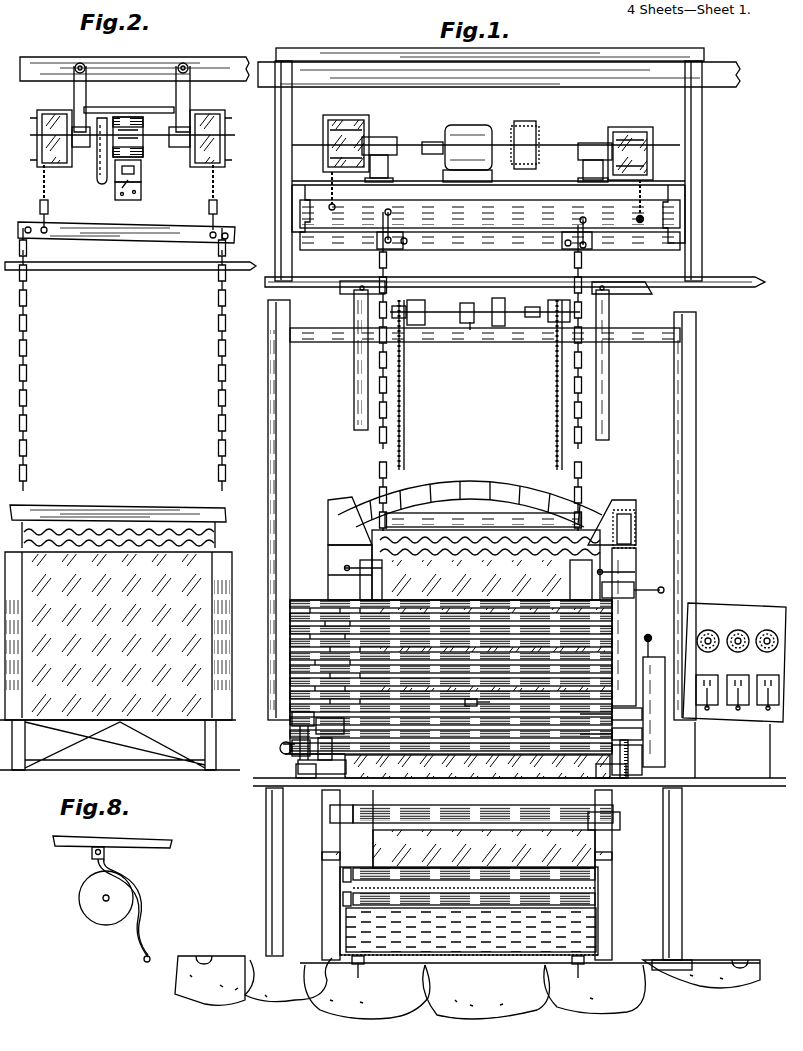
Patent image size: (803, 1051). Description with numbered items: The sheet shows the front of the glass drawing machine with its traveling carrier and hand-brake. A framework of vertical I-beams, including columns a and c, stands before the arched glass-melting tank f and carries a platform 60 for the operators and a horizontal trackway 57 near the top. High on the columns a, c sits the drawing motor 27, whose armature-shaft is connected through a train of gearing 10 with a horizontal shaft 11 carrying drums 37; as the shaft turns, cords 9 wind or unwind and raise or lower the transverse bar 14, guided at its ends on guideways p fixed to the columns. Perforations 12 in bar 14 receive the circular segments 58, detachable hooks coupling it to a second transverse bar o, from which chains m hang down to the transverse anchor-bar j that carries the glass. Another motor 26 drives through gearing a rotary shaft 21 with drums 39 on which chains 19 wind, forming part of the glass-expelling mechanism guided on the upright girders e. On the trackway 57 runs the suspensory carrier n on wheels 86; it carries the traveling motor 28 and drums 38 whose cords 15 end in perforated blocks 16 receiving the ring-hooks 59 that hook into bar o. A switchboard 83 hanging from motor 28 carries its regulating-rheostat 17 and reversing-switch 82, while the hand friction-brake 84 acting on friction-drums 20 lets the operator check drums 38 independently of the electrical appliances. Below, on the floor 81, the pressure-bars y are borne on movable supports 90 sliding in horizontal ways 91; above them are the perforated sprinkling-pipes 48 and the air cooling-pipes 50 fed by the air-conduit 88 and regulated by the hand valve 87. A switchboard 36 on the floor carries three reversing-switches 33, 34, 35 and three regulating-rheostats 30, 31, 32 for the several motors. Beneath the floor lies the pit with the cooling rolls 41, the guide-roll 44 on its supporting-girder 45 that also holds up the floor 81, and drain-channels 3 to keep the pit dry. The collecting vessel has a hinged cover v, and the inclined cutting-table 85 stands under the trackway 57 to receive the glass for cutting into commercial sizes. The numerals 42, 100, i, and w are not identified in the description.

In FIG. 1, the drain-channels 3 is at (740, 968).
In FIG. 1, the flexible bands or wire cords 9 is at (638, 203).
In FIG. 1, the train of gearing 10 is at (532, 136).
In FIG. 1, the horizontal rotary shaft 11 is at (565, 148).
In FIG. 1, the perforations 12 is at (586, 220).
In FIG. 1, the transverse bar 14 is at (616, 236).
In FIG. 2, the suspensory bands or wire cords 15 is at (218, 195).
In FIG. 2, the blocks 16 is at (117, 214).
In FIG. 2, the regulating-rheostat 17 is at (120, 196).
In FIG. 1, the winding ropes or chains 19 is at (480, 385).
In FIG. 8, the friction-drums 20 is at (111, 880).
In FIG. 1, the rotary shaft 21 is at (485, 315).
In FIG. 1, the electric motor 26 is at (472, 330).
In FIG. 1, the motor 27 is at (459, 142).
In FIG. 2, the traveling motor 28 is at (143, 150).
In FIG. 1, the regulating-rheostat 30 is at (706, 631).
In FIG. 1, the regulating-rheostat 31 is at (737, 631).
In FIG. 1, the regulating-rheostat 32 is at (767, 631).
In FIG. 1, the reversing-switch 33 is at (705, 683).
In FIG. 1, the reversing-switch 34 is at (738, 683).
In FIG. 1, the reversing-switch 35 is at (768, 683).
In FIG. 1, the switchboard 36 is at (734, 690).
In FIG. 1, the drums 37 is at (489, 140).
In FIG. 2, the drums 38 is at (212, 116).
In FIG. 1, the drums 39 is at (598, 318).
In FIG. 1, the rolls 41 is at (469, 892).
In FIG. 1, the tank bottom 42 is at (600, 916).
In FIG. 1, the guide-roll 44 is at (475, 826).
In FIG. 1, the supporting-girder 45 is at (610, 888).
In FIG. 1, the sprinkling-pipes 48 is at (645, 726).
In FIG. 1, the air cooling-pipes 50 is at (309, 593).
In FIG. 2, the trackway 57 is at (134, 60).
In FIG. 1, the trackway 57 is at (710, 56).
In FIG. 1, the circular segments 58 is at (376, 236).
In FIG. 2, the segmental ring-hooks 59 is at (226, 226).
In FIG. 2, the platform 60 is at (130, 257).
In FIG. 1, the platform 60 is at (515, 272).
In FIG. 1, the floor 81 is at (519, 777).
In FIG. 2, the reversing-switch 82 is at (135, 172).
In FIG. 2, the switchboard 83 is at (141, 195).
In FIG. 2, the hand friction-brake 84 is at (89, 151).
In FIG. 8, the hand friction-brake 84 is at (129, 904).
In FIG. 2, the inclined cutting-table 85 is at (120, 745).
In FIG. 2, the wheels 86 is at (186, 60).
In FIG. 1, the hand gate or valve 87 is at (664, 590).
In FIG. 1, the air-conduit 88 is at (636, 526).
In FIG. 1, the movable supports 90 is at (461, 745).
In FIG. 1, the horizontal ways 91 is at (624, 788).
In FIG. 2, the shaft 100 is at (160, 132).
In FIG. 1, the vertical I-beam a is at (696, 398).
In FIG. 1, the vertical I-beam c is at (290, 370).
In FIG. 1, the upright girders e is at (478, 365).
In FIG. 1, the glass-melting tank f is at (473, 503).
In FIG. 2, the glass plate i is at (118, 621).
In FIG. 1, the glass plate i is at (486, 565).
In FIG. 2, the transverse anchor-bar j is at (125, 517).
In FIG. 1, the transverse anchor-bar j is at (482, 525).
In FIG. 2, the chains m is at (219, 340).
In FIG. 1, the chains m is at (586, 450).
In FIG. 2, the suspensory carrier n is at (129, 101).
In FIG. 2, the transverse bar o is at (154, 248).
In FIG. 1, the transverse bar o is at (490, 247).
In FIG. 1, the guideways p is at (674, 430).
In FIG. 1, the cover v is at (476, 580).
In FIG. 1, the rod w is at (345, 566).
In FIG. 1, the pressure-bars or drawing-bars y is at (477, 752).